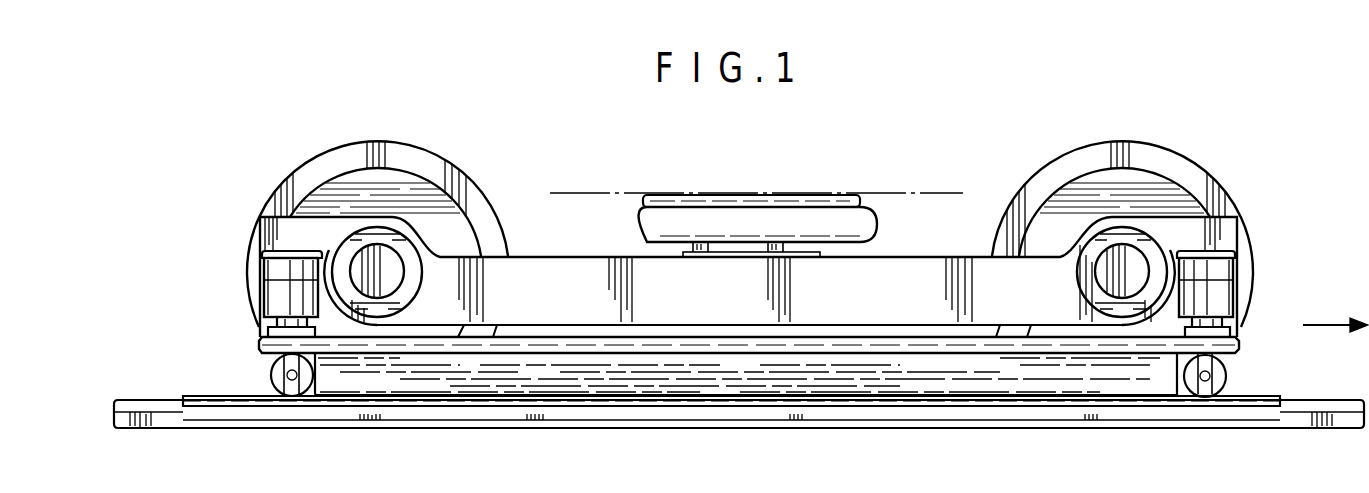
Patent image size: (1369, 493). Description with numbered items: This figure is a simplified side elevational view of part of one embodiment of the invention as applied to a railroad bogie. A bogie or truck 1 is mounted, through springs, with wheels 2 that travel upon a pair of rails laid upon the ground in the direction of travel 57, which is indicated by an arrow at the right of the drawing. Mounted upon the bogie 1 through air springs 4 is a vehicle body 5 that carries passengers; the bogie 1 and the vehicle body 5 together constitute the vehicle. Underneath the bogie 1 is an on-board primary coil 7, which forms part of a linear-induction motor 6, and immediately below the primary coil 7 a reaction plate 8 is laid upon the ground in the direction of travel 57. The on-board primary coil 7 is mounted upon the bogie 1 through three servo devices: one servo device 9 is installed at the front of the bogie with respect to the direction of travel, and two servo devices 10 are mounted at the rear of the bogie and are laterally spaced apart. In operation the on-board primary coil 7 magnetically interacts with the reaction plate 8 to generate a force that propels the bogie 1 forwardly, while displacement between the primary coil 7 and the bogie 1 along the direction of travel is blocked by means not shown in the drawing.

The bogie 1 is at (913, 270).
The wheels 2 is at (333, 153).
The air springs 4 is at (798, 215).
The vehicle body 5 is at (587, 193).
The linear-induction motor 6 is at (739, 431).
The on-board primary coil 7 is at (577, 370).
The reaction plate 8 is at (607, 413).
The servo device 9 is at (1222, 297).
The servo devices 10 is at (278, 295).
The direction of travel 57 is at (1335, 325).